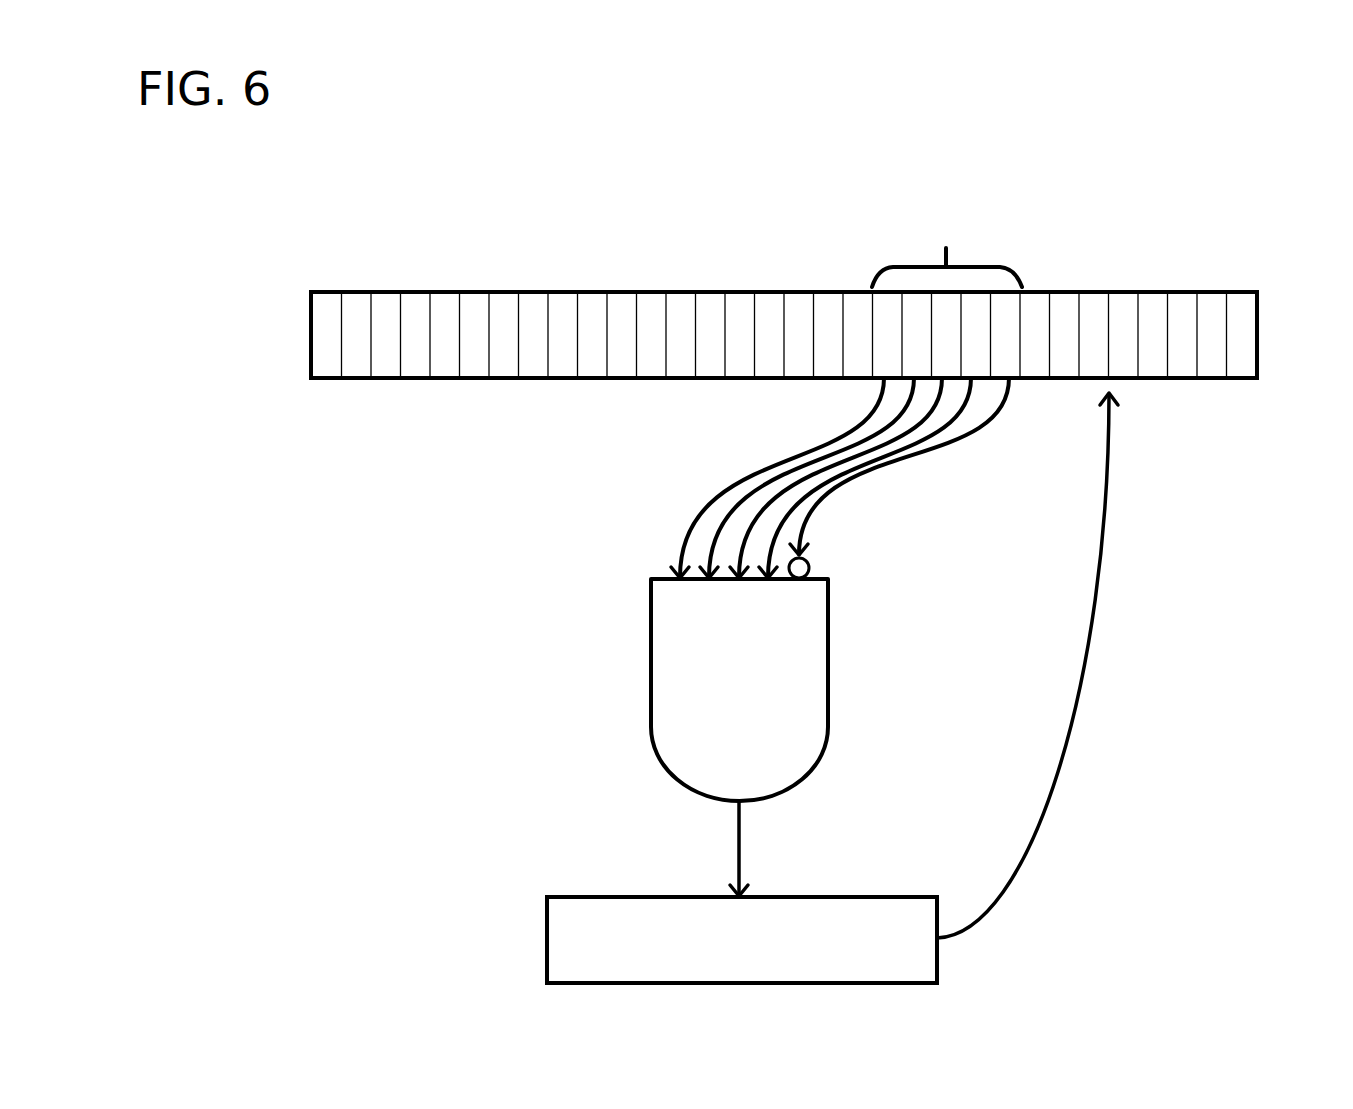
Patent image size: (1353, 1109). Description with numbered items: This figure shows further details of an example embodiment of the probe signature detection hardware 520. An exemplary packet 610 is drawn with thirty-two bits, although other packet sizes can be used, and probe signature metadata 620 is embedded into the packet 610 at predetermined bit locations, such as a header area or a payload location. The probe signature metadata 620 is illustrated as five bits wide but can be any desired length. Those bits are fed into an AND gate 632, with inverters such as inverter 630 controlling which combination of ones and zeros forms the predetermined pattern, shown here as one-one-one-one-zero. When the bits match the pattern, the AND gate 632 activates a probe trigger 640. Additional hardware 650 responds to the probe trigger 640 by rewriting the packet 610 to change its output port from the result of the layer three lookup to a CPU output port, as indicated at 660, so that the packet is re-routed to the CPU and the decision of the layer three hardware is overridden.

The probe signature detection hardware 520 is at (645, 155).
The packet 610 is at (563, 410).
The probe signature metadata 620 is at (846, 348).
The inverter 630 is at (810, 568).
The AND gate 632 is at (650, 697).
The probe trigger 640 is at (798, 845).
The additional hardware 650 is at (547, 940).
The rewriting of the packet to change the output port to the CPU 660 is at (1100, 665).